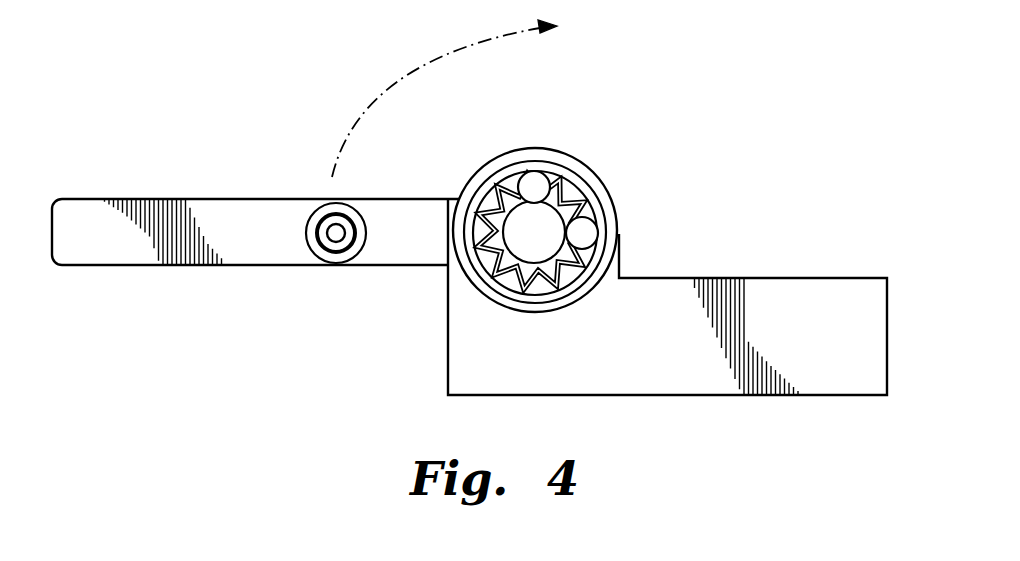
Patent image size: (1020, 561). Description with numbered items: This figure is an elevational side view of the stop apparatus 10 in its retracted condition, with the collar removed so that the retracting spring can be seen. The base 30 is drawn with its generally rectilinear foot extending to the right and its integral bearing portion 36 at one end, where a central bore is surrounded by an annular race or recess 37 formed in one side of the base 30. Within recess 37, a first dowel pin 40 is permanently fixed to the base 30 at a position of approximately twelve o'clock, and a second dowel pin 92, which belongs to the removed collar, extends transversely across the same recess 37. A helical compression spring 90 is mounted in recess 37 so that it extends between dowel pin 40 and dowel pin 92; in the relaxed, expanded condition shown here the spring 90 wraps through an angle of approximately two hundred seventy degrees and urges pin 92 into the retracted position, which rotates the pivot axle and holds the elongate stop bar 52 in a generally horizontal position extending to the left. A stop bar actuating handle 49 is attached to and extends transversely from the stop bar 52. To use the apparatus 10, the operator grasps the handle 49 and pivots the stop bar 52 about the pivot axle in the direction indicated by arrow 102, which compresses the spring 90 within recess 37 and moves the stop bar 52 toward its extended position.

The stop apparatus 10 is at (469, 237).
The base 30 is at (806, 295).
The bearing portion 36 is at (604, 185).
The annular race or recess 37 is at (570, 292).
The first dowel pin 40 is at (551, 186).
The stop bar actuating handle 49 is at (340, 223).
The stop bar 52 is at (186, 182).
The helical compression spring 90 is at (497, 293).
The dowel pin 92 is at (585, 232).
The arrow 102 is at (373, 99).